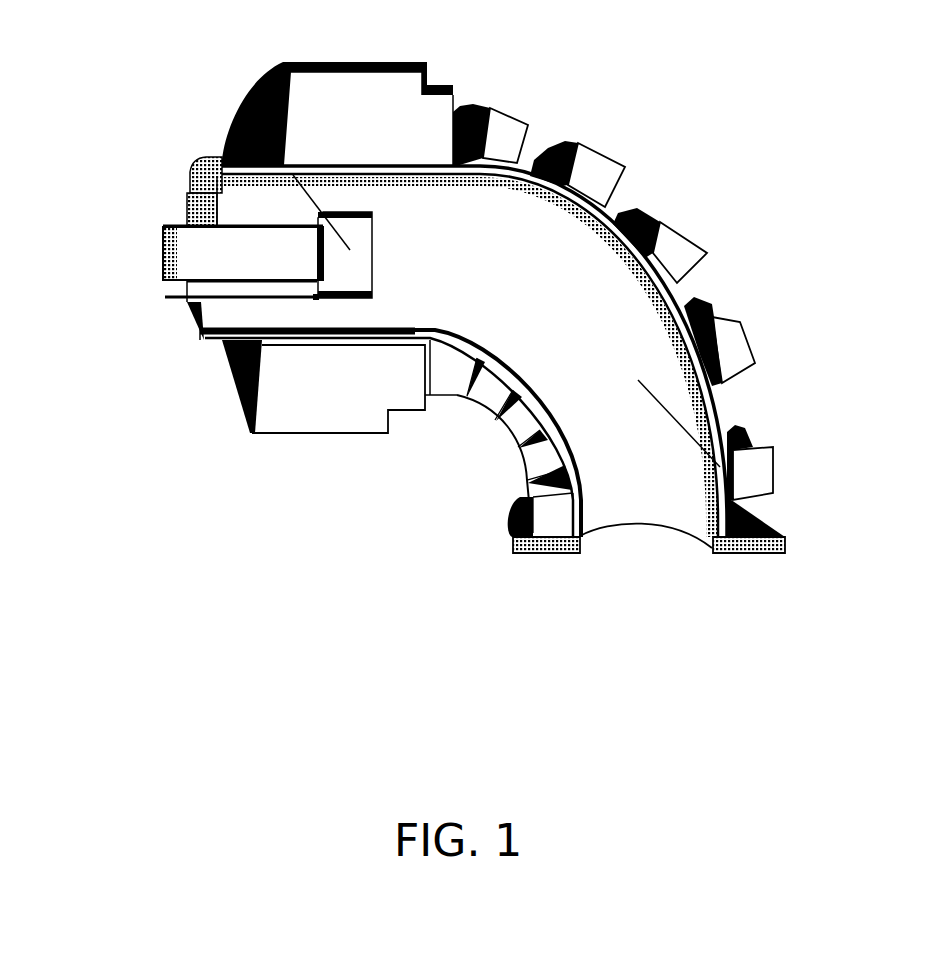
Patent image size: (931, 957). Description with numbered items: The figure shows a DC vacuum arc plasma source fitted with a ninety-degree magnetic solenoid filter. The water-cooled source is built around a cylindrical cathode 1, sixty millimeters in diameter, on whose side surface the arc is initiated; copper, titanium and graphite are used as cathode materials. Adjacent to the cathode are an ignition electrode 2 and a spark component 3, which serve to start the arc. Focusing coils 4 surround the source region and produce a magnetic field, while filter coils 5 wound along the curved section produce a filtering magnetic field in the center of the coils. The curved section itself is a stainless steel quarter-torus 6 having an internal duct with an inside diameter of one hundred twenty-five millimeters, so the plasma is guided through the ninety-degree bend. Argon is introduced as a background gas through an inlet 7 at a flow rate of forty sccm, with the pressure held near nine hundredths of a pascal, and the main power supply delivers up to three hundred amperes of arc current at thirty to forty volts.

The cathode 1 is at (236, 99).
The ignition electrode 2 is at (165, 295).
The spark component 3 is at (227, 372).
The focusing coils 4 is at (290, 408).
The filter coils 5 is at (757, 462).
The stainless steel quarter-torus 6 is at (728, 473).
The inlet 7 is at (190, 192).